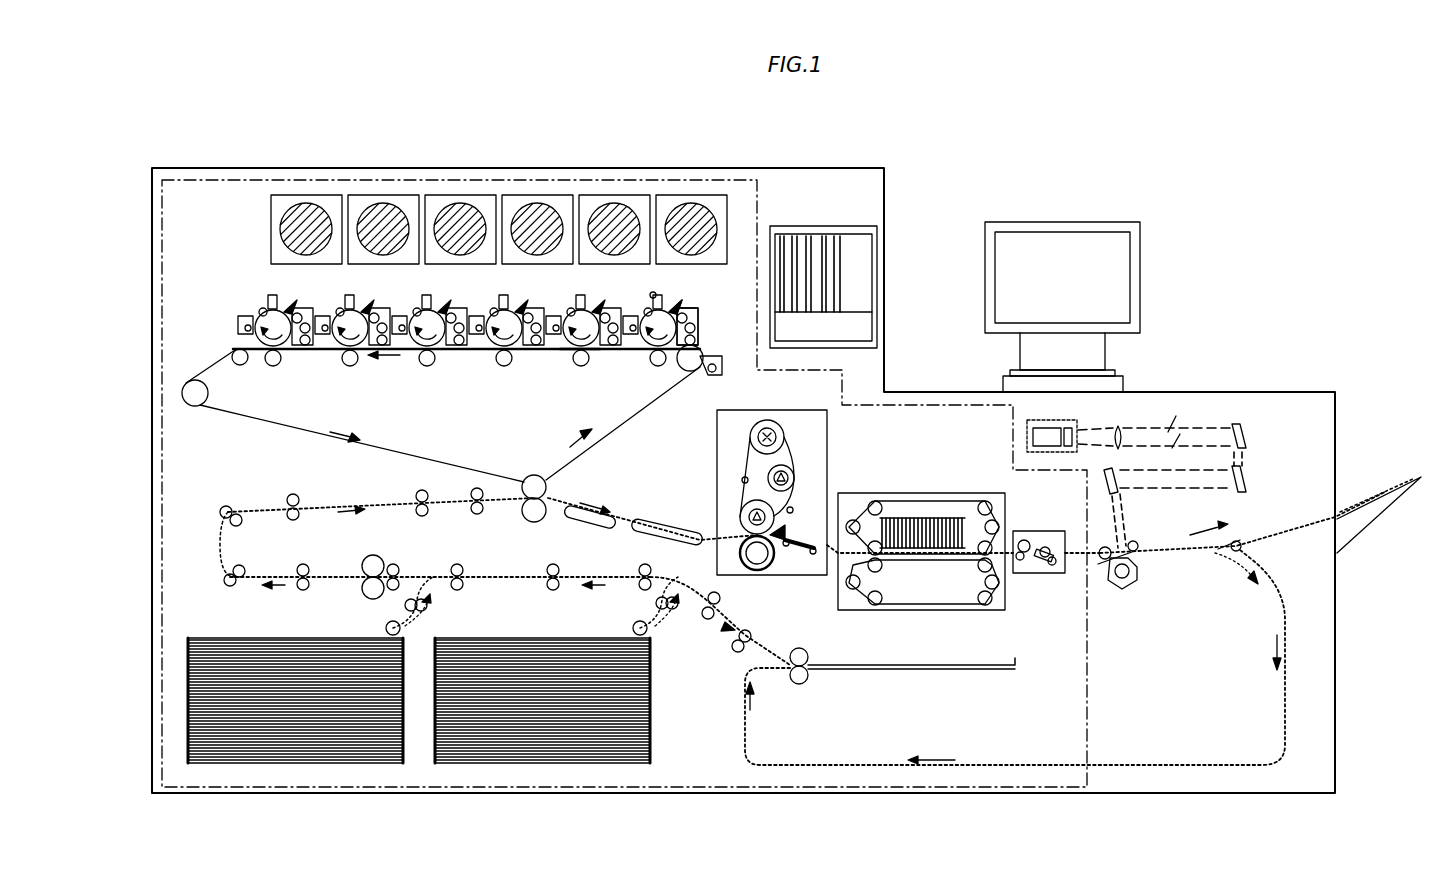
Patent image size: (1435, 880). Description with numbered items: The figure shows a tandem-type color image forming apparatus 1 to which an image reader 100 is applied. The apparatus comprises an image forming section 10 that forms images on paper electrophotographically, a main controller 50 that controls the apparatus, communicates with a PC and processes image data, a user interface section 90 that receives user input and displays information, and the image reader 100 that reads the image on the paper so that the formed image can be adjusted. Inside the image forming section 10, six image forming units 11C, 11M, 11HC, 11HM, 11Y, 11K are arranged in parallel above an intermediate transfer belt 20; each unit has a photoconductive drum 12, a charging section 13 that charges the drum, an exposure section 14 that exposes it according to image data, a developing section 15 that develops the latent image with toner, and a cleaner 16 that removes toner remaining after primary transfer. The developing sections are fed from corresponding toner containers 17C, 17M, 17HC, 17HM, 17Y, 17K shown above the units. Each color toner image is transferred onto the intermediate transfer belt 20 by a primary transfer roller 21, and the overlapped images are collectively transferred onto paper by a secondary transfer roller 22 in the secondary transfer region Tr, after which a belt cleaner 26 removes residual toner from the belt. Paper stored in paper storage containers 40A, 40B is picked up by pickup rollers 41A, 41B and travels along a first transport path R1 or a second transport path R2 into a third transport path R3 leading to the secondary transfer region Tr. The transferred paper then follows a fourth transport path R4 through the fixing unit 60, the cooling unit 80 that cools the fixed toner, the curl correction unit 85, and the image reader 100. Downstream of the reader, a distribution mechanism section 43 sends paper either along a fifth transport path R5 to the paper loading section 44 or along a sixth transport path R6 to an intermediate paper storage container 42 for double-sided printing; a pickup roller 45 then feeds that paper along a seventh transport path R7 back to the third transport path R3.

The image forming apparatus 1 is at (848, 152).
The image forming section 10 is at (752, 153).
The toner container 17K is at (294, 195).
The toner container 17Y is at (371, 195).
The toner container 17HM is at (448, 195).
The toner container 17HC is at (525, 195).
The toner container 17M is at (602, 195).
The toner container 17C is at (679, 195).
The image forming unit 11K is at (300, 305).
The image forming unit 11Y is at (377, 305).
The image forming unit 11HM is at (484, 288).
The image forming unit 11HC is at (561, 288).
The image forming unit 11M is at (636, 288).
The image forming unit 11C is at (704, 322).
The photoconductive drum 12 is at (596, 362).
The charging section 13 is at (640, 302).
The exposure section 14 is at (680, 308).
The developing section 15 is at (696, 310).
The cleaner 16 is at (572, 351).
The intermediate transfer belt 20 is at (304, 432).
The primary transfer roller 21 is at (271, 367).
The secondary transfer roller 22 is at (532, 522).
The belt cleaner 26 is at (708, 380).
The secondary transfer region Tr is at (556, 496).
The third transport path R3 is at (268, 574).
The fourth transport path R4 is at (622, 512).
The seventh transport path R7 is at (728, 610).
The first transport path R1 is at (414, 629).
The second transport path R2 is at (672, 642).
The fifth transport path R5 is at (1260, 516).
The sixth transport path R6 is at (826, 765).
The paper storage container 40A is at (215, 636).
The paper storage container 40B is at (520, 636).
The pickup roller 41A is at (386, 628).
The pickup roller 41B is at (633, 626).
The intermediate paper storage container 42 is at (962, 672).
The distribution mechanism section 43 is at (1218, 549).
The paper loading section 44 is at (1368, 530).
The pickup roller 45 is at (806, 647).
The main controller 50 is at (815, 227).
The fixing unit 60 is at (733, 410).
The cooling unit 80 is at (930, 493).
The curl correction unit 85 is at (1042, 531).
The user interface section 90 is at (1075, 222).
The image reader 100 is at (1198, 424).